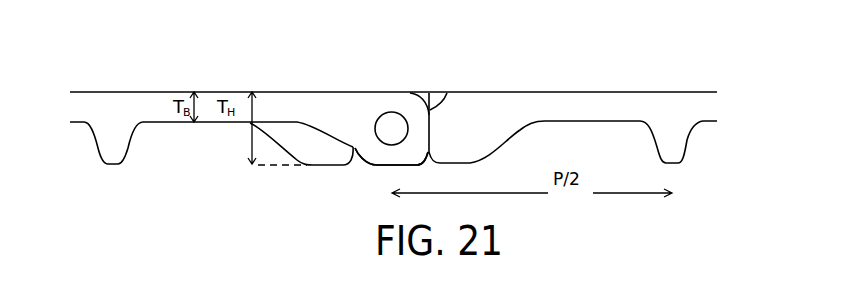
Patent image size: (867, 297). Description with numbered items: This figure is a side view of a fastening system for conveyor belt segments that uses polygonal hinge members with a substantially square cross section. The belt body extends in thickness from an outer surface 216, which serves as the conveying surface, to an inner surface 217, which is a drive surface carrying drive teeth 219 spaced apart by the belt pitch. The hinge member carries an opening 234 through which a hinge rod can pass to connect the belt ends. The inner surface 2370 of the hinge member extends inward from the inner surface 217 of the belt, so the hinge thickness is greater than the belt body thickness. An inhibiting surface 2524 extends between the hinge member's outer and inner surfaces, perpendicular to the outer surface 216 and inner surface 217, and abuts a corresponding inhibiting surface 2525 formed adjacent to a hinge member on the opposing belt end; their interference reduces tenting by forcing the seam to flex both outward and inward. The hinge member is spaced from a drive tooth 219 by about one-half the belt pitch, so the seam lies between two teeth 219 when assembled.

The outer surface 216 is at (567, 91).
The inner surface 217 is at (567, 122).
The teeth 219 is at (686, 139).
The openings 234 is at (393, 132).
The inhibiting surface 2524 is at (430, 104).
The inhibiting surface 2525 is at (426, 126).
The inner surface of the hinge member 2370 is at (415, 163).